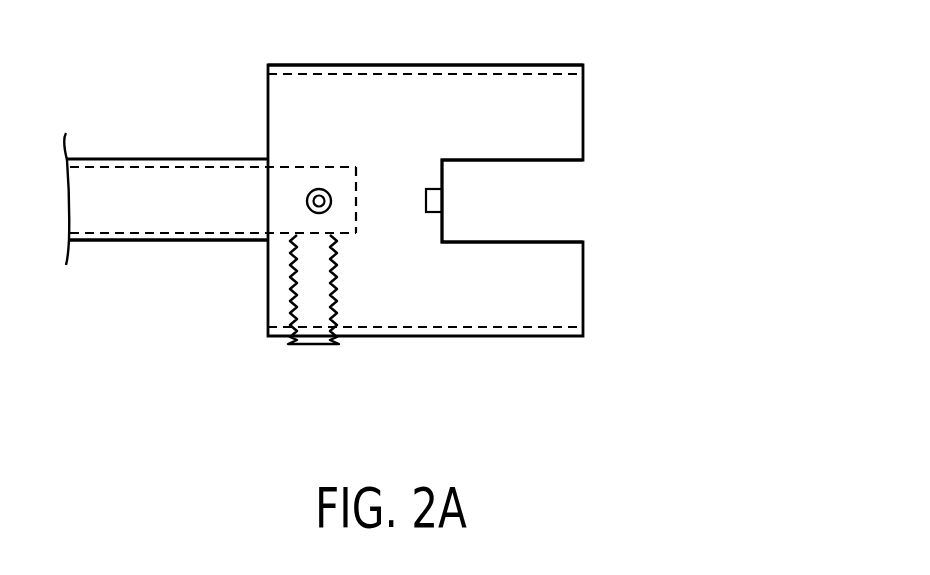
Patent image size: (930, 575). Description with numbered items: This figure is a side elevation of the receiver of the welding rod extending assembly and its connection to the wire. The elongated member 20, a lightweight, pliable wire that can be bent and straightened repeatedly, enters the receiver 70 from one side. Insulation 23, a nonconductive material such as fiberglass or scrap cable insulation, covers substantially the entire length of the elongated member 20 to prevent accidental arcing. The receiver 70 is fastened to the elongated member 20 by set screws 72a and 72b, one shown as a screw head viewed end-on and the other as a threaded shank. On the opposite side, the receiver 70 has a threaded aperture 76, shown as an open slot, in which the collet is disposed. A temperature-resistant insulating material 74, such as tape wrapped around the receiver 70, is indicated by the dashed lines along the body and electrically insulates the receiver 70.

The elongated member 20 is at (143, 180).
The insulation 23 is at (147, 240).
The receiver 70 is at (495, 317).
The set screw 72a is at (322, 187).
The set screw 72b is at (290, 290).
The insulating material 74 is at (417, 72).
The threaded aperture 76 is at (554, 240).